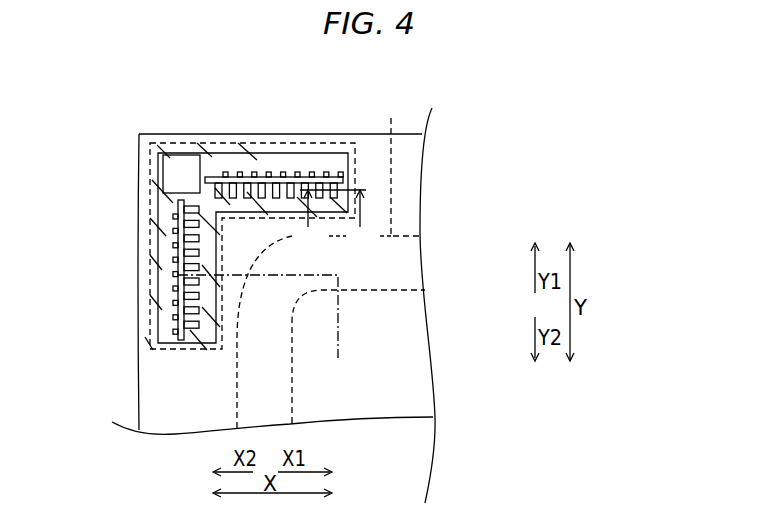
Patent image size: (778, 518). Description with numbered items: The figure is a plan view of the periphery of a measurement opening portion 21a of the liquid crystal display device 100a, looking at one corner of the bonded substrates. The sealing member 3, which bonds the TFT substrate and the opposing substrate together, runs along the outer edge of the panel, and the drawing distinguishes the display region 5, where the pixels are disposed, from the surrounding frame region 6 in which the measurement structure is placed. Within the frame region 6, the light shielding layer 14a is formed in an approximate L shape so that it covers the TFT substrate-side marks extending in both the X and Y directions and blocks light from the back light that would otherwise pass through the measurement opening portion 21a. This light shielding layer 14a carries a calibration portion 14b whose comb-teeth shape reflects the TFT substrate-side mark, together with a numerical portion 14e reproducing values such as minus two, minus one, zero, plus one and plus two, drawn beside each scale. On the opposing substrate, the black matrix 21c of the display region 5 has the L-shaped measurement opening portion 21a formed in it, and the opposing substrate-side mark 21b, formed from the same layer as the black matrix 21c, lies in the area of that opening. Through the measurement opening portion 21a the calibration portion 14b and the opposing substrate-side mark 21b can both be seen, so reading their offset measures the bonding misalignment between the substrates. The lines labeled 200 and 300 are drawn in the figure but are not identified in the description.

The liquid crystal display device 100a is at (551, 106).
The light shielding layer 14a is at (235, 142).
The calibration portion 14b is at (355, 177).
The numerical portion 14e is at (178, 256).
The measurement opening portion 21a is at (279, 159).
The opposing substrate-side mark 21b is at (308, 175).
The black matrix 21c is at (371, 147).
The sealing member 3 is at (404, 166).
The display region 5 is at (414, 308).
The frame region 6 is at (407, 192).
The center line 200 is at (337, 355).
The boundary line 300 is at (314, 309).